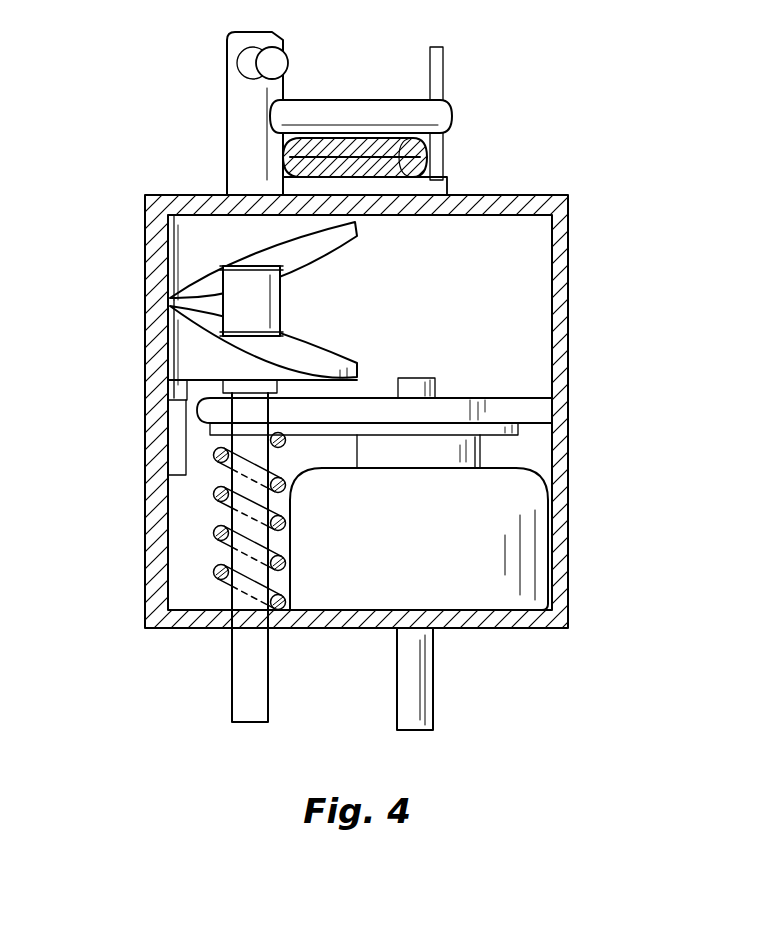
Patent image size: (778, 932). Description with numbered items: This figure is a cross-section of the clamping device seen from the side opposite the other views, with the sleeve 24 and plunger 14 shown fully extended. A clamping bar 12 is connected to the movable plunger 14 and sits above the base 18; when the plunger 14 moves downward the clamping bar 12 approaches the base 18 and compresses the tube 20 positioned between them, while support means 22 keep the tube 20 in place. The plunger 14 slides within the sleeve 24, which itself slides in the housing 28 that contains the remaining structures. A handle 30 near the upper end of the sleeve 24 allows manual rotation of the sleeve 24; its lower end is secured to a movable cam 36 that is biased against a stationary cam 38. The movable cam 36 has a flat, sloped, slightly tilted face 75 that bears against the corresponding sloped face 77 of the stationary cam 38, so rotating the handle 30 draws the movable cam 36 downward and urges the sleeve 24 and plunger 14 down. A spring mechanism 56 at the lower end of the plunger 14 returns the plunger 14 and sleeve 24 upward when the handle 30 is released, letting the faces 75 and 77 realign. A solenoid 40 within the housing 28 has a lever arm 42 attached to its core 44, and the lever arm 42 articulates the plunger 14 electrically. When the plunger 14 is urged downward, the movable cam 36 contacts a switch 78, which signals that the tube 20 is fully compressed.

The clamping bar 12 is at (437, 115).
The plunger 14 is at (248, 680).
The base 18 is at (447, 183).
The tube 20 is at (418, 160).
The support means 22 is at (437, 67).
The sleeve 24 is at (243, 127).
The housing 28 is at (560, 270).
The handle 30 is at (275, 58).
The movable cam 36 is at (200, 357).
The stationary cam 38 is at (207, 234).
The solenoid 40 is at (508, 498).
The lever arm 42 is at (540, 408).
The core 44 is at (410, 670).
The spring mechanism 56 is at (218, 530).
The sloped face of movable cam 75 is at (316, 352).
The sloped face of stationary cam 77 is at (312, 246).
The switch 78 is at (178, 392).